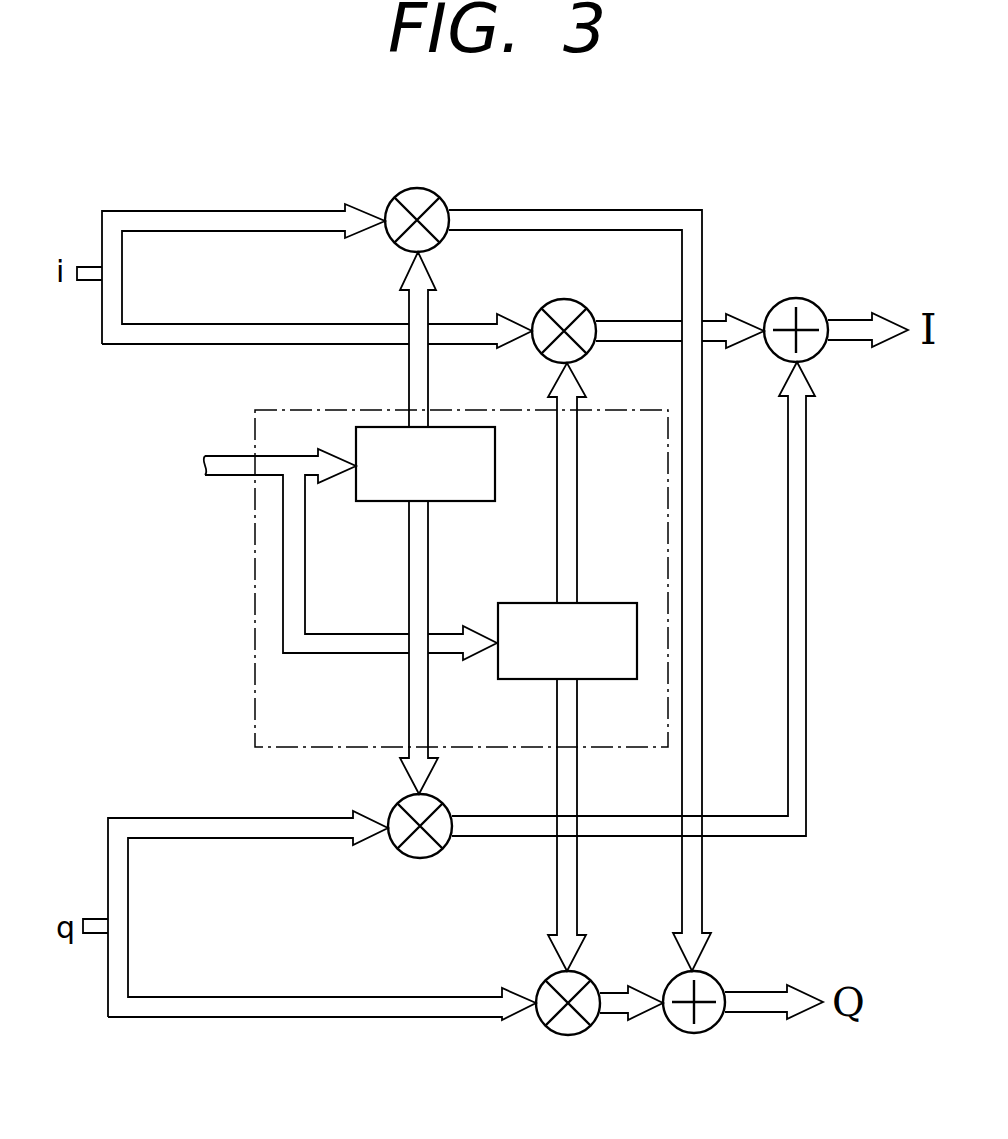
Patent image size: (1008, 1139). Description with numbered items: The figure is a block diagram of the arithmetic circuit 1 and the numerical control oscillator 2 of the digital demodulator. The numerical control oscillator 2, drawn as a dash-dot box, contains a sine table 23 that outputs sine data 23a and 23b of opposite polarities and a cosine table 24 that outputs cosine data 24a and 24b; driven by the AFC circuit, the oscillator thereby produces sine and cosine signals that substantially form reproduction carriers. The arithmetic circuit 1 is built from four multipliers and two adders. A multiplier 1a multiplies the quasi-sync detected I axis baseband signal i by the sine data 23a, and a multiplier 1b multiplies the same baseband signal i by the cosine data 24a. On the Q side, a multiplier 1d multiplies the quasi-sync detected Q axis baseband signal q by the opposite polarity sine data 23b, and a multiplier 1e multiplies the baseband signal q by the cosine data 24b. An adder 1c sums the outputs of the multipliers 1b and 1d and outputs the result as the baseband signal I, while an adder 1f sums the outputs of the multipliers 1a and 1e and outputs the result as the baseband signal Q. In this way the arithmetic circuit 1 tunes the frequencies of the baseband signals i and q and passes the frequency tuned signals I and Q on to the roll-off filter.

The arithmetic circuit 1 is at (735, 287).
The multiplier 1a is at (417, 188).
The multiplier 1b is at (541, 308).
The adder 1c is at (797, 298).
The multiplier 1d is at (420, 858).
The multiplier 1e is at (545, 980).
The adder 1f is at (672, 978).
The numerical control oscillator 2 is at (361, 585).
The sine table 23 is at (382, 426).
The sine data 23a is at (430, 383).
The sine data 23b is at (409, 708).
The cosine table 24 is at (521, 603).
The cosine data 24a is at (580, 546).
The cosine data 24b is at (556, 724).